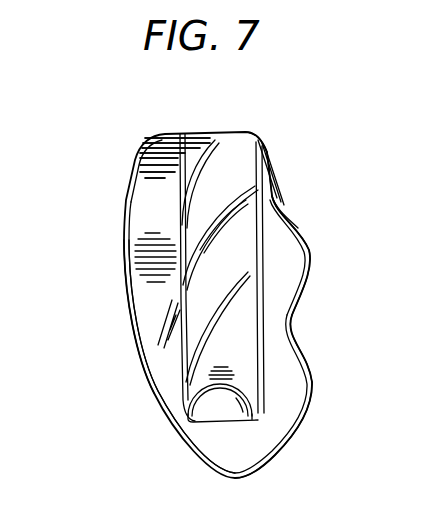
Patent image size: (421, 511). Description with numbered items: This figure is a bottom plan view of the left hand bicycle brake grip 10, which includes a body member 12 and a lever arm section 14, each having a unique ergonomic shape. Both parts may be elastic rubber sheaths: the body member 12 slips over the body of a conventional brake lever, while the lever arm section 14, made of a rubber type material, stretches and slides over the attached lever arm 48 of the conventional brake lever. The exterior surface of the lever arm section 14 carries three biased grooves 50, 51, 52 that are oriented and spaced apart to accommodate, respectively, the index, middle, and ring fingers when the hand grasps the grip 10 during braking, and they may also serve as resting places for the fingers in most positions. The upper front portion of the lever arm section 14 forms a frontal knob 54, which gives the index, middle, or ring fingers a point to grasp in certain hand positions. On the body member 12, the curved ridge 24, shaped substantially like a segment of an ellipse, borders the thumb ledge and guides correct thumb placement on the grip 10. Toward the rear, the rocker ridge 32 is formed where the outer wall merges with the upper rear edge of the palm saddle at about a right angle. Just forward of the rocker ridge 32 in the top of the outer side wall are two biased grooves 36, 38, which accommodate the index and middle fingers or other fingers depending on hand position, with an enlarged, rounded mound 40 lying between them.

The bicycle brake grip 10 is at (110, 148).
The body member 12 is at (154, 393).
The lever arm section 14 is at (238, 256).
The curved ridge 24 is at (138, 358).
The rocker ridge 32 is at (311, 412).
The biased groove 36 is at (282, 206).
The biased groove 38 is at (296, 326).
The rounded mound 40 is at (311, 281).
The lever arm 48 is at (252, 420).
The biased groove 50 is at (210, 190).
The biased groove 51 is at (205, 268).
The biased groove 52 is at (210, 342).
The frontal knob 54 is at (200, 137).